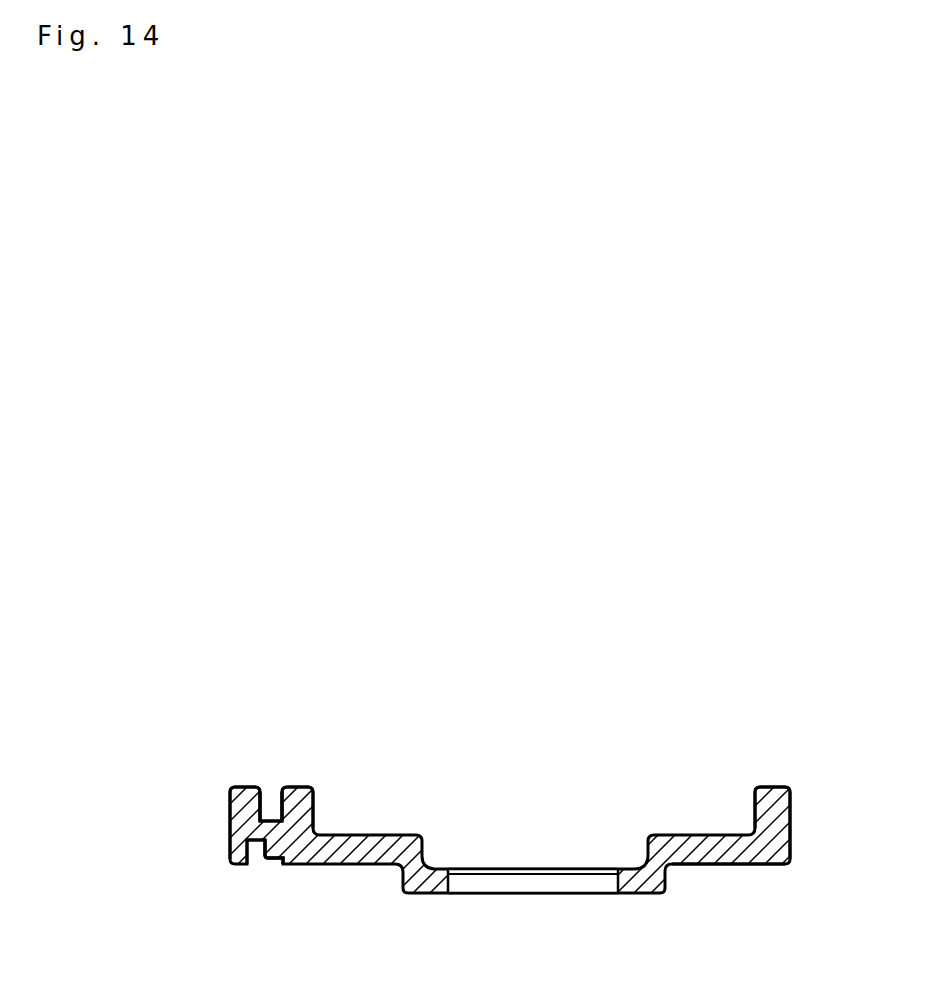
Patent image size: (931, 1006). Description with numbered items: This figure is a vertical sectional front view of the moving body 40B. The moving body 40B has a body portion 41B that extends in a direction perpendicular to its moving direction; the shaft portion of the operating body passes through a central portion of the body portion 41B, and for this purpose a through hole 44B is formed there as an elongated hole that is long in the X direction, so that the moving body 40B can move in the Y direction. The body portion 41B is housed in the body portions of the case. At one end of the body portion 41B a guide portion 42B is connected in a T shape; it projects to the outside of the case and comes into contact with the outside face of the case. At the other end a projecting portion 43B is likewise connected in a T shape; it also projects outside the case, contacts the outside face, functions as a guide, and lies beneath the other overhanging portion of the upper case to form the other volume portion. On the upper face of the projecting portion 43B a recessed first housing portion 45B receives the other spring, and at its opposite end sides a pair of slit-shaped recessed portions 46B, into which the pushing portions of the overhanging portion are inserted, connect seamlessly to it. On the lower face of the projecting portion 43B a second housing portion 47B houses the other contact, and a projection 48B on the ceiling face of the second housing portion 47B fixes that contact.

The moving body 40B is at (702, 781).
The body portion 41B is at (695, 866).
The guide portion 42B is at (789, 800).
The projecting portion 43B is at (228, 820).
The through hole 44B is at (538, 890).
The first housing portion 45B is at (292, 800).
The recessed portions 46B is at (273, 805).
The second housing portion 47B is at (254, 852).
The projection 48B is at (282, 864).